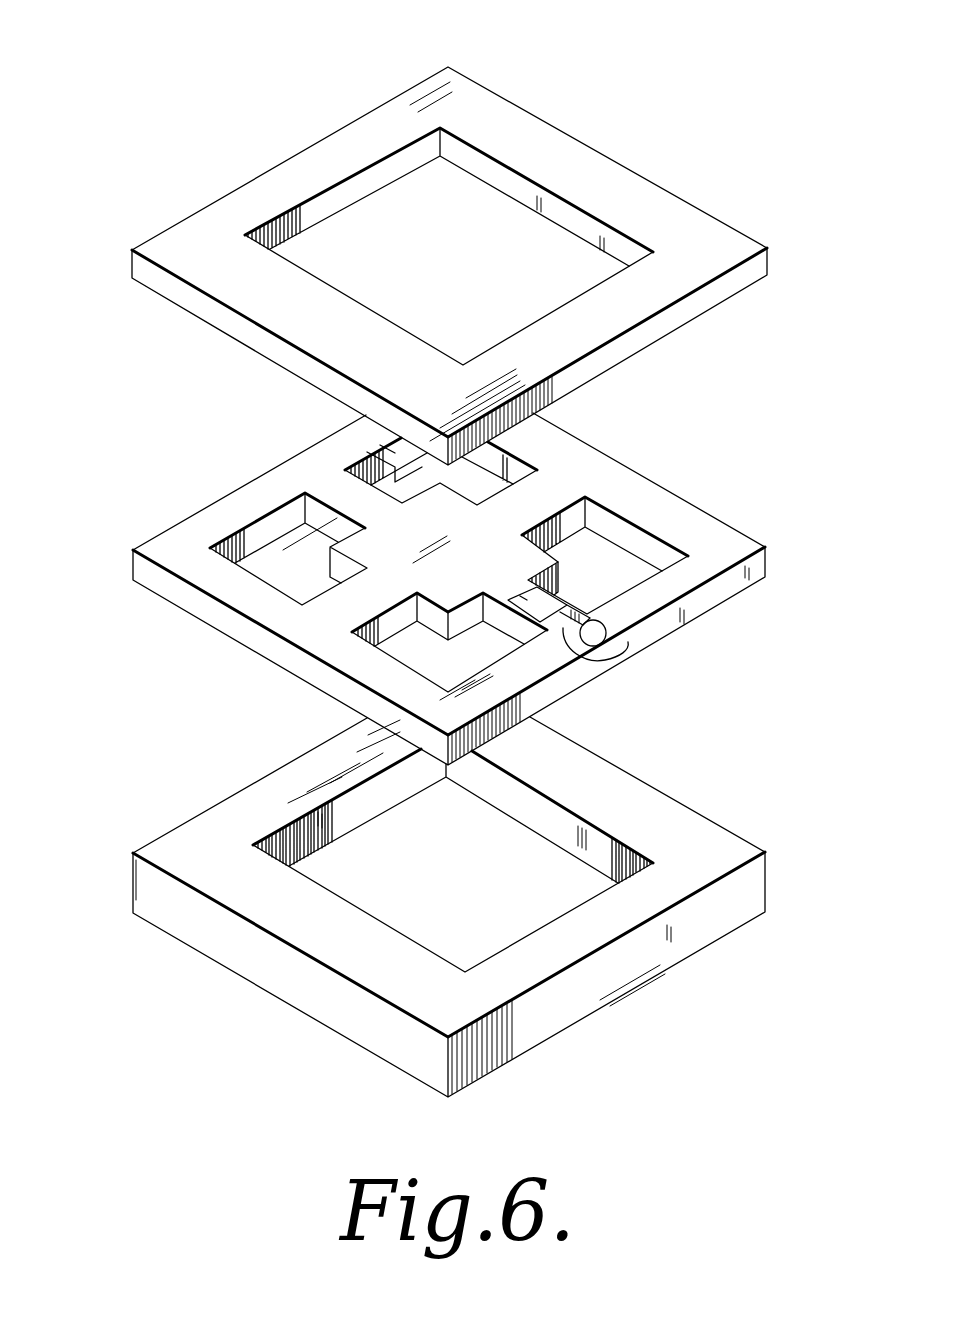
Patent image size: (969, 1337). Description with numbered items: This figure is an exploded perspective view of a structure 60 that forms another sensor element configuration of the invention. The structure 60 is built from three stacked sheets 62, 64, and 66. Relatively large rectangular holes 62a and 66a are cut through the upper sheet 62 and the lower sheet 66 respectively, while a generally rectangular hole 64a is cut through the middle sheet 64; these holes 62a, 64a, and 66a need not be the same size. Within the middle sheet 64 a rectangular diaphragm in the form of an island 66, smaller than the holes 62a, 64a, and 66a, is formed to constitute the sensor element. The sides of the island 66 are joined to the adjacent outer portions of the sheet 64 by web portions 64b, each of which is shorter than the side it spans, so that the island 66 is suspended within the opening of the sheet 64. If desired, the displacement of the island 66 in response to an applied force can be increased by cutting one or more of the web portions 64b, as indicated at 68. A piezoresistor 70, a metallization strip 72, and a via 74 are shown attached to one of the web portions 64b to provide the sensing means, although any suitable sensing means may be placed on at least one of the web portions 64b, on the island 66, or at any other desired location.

The structure 60 is at (234, 100).
The sheet 62 is at (232, 196).
The rectangular hole 62a is at (386, 178).
The sheet 64 is at (252, 480).
The rectangular hole 64a is at (607, 517).
The web portions 64b is at (323, 512).
The sheet 66 is at (560, 555).
The rectangular hole 66a is at (573, 898).
The cut 68 is at (380, 463).
The piezoresistor 70 is at (543, 607).
The metallization strip 72 is at (570, 651).
The via 74 is at (583, 637).